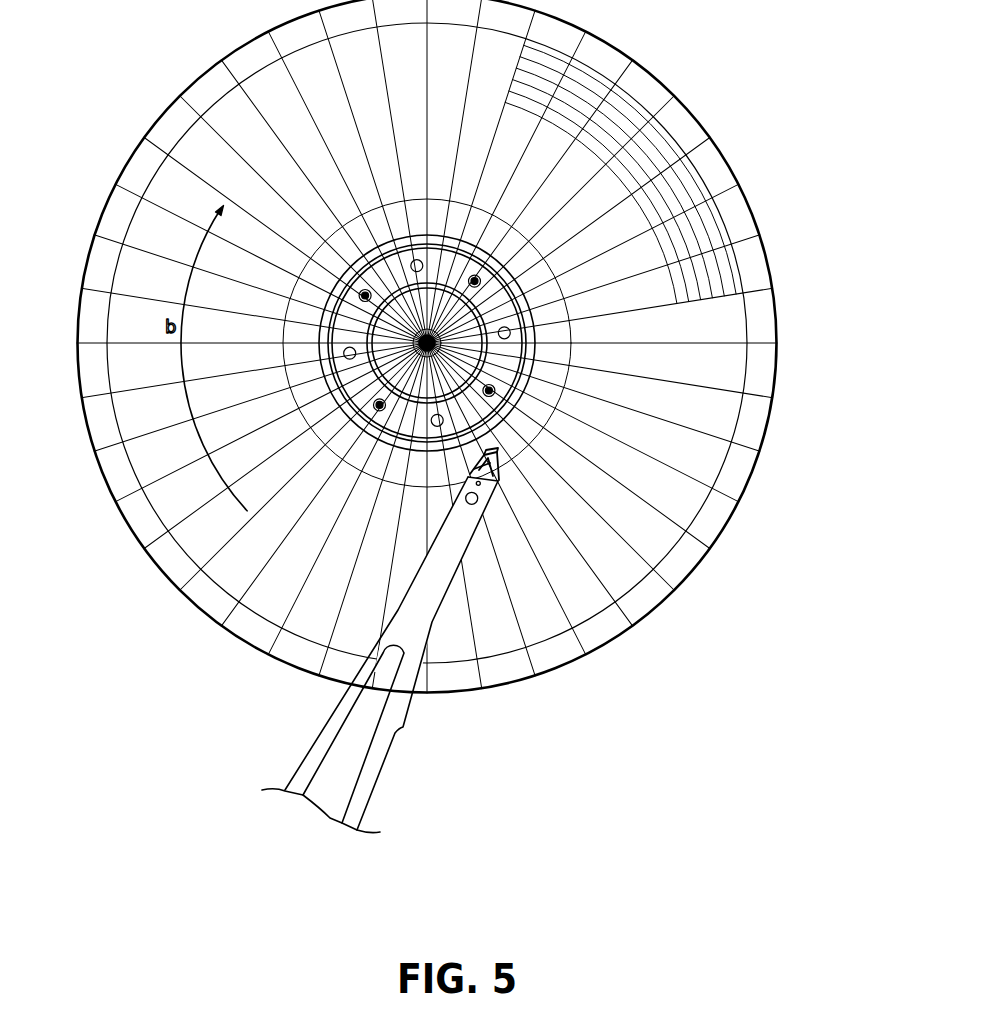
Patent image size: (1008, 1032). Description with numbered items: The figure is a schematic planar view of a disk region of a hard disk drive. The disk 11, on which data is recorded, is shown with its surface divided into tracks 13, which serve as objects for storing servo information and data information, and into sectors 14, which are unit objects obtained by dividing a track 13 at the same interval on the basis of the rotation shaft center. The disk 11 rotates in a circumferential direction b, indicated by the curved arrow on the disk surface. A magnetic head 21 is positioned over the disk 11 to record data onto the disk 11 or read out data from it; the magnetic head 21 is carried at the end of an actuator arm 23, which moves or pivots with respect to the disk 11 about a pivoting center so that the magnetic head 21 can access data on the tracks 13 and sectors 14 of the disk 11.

The disk 11 is at (650, 595).
The tracks 13 is at (693, 118).
The sectors 14 is at (726, 412).
The magnetic head 21 is at (518, 457).
The actuator arm 23 is at (373, 758).